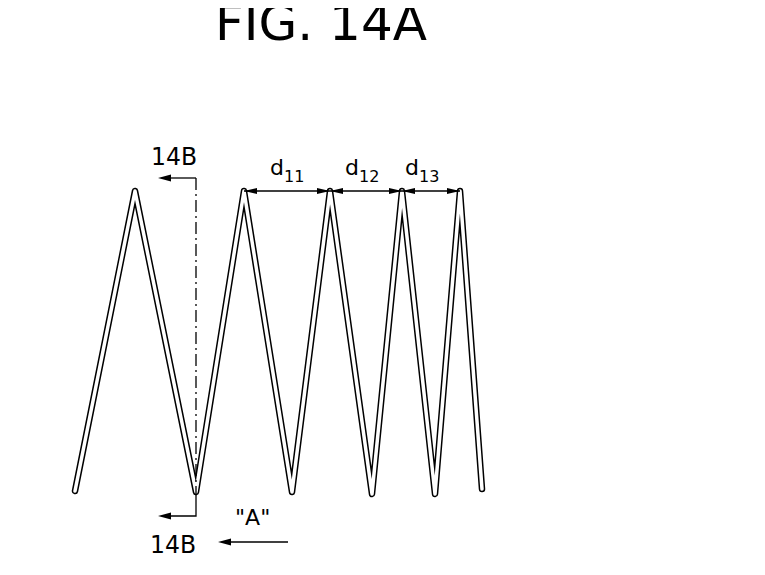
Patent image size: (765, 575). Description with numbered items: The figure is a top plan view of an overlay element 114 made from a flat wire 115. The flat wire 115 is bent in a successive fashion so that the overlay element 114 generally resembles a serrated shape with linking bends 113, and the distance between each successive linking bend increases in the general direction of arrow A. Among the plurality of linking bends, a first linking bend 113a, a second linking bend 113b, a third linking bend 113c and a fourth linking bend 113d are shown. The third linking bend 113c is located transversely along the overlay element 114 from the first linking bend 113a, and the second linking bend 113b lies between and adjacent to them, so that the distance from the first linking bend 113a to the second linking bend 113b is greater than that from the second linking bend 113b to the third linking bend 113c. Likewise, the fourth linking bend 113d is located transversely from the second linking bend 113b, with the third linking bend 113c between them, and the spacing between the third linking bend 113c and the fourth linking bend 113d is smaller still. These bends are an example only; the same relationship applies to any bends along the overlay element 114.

The linking bends 113 is at (134, 180).
The first linking bend 113a is at (245, 180).
The second linking bend 113b is at (332, 180).
The third linking bend 113c is at (403, 180).
The fourth linking bend 113d is at (470, 187).
The overlay element 114 is at (194, 122).
The flat wire 115 is at (470, 252).